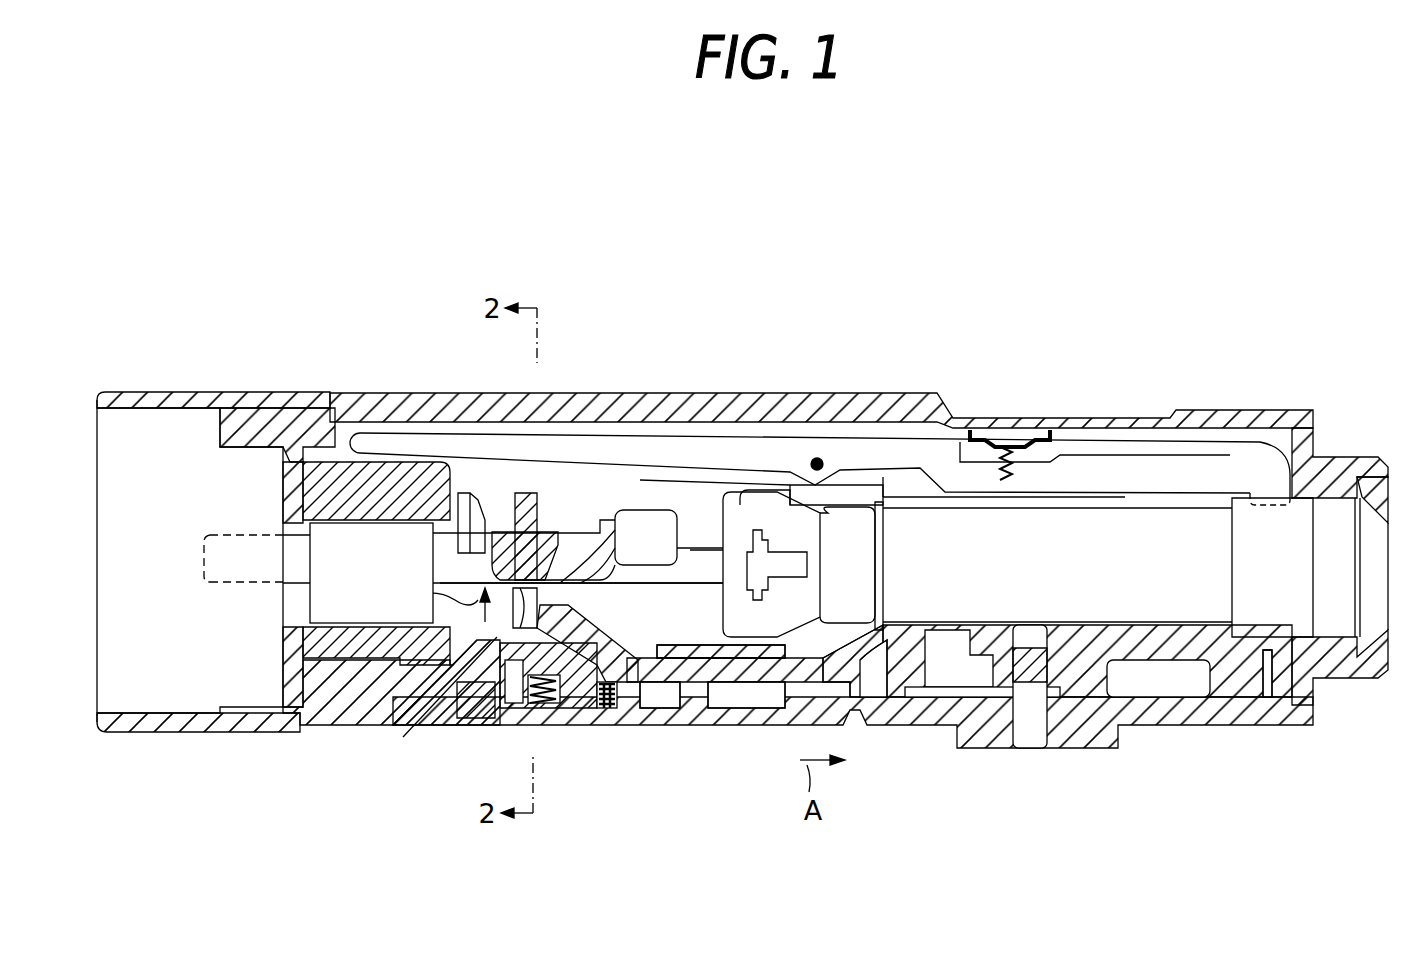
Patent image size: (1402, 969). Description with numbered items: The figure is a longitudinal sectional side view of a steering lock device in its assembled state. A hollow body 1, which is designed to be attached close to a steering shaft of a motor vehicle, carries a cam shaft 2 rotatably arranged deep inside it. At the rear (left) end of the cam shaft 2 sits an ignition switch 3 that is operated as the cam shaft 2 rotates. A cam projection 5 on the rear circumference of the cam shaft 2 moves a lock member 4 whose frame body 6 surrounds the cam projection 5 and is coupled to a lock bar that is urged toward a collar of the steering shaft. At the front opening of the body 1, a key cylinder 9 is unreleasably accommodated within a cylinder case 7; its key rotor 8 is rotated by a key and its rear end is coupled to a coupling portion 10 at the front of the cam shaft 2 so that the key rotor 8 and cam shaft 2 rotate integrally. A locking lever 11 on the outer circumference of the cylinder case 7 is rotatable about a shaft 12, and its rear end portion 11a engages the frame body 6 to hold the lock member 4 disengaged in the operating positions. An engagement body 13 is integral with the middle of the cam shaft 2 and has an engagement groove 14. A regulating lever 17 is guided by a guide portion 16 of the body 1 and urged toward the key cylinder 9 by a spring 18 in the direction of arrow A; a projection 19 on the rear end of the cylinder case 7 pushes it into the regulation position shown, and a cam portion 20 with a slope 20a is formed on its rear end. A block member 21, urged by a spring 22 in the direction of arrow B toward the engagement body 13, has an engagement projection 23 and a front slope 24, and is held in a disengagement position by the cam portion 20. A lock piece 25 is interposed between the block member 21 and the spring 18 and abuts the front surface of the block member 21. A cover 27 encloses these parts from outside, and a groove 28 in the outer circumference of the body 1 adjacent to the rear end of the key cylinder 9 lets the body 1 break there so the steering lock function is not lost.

The body 1 is at (783, 393).
The cam shaft 2 is at (573, 550).
The ignition switch 3 is at (150, 430).
The lock member 4 is at (305, 442).
The cam projection 5 is at (343, 537).
The frame body 6 is at (310, 475).
The cylinder case 7 is at (1178, 680).
The key rotor 8 is at (1128, 540).
The key cylinder 9 is at (1115, 685).
The coupling portion 10 is at (737, 503).
The locking lever 11 is at (927, 462).
The rear end portion 11a is at (382, 443).
The shaft 12 is at (820, 456).
The engagement body 13 is at (532, 475).
The engagement groove 14 is at (403, 737).
The guide portion 16 is at (752, 695).
The regulating lever 17 is at (668, 660).
The spring 18 is at (640, 700).
The projection 19 is at (876, 683).
The cam portion 20 is at (567, 633).
The slope 20a is at (620, 545).
The block member 21 is at (512, 690).
The spring 22 is at (548, 705).
The engagement projection 23 is at (478, 690).
The slope 24 is at (540, 637).
The lock piece 25 is at (592, 708).
The cover 27 is at (720, 700).
The groove 28 is at (860, 398).